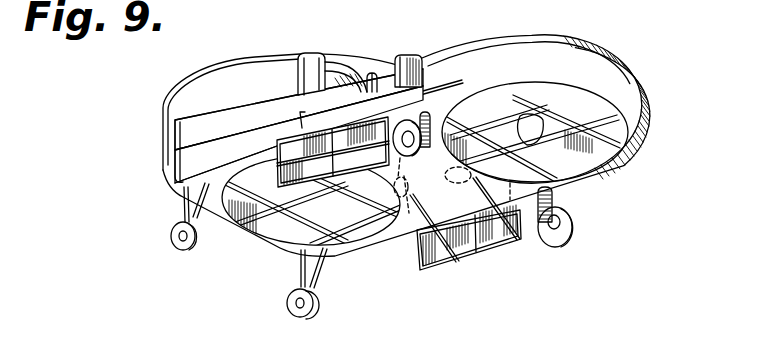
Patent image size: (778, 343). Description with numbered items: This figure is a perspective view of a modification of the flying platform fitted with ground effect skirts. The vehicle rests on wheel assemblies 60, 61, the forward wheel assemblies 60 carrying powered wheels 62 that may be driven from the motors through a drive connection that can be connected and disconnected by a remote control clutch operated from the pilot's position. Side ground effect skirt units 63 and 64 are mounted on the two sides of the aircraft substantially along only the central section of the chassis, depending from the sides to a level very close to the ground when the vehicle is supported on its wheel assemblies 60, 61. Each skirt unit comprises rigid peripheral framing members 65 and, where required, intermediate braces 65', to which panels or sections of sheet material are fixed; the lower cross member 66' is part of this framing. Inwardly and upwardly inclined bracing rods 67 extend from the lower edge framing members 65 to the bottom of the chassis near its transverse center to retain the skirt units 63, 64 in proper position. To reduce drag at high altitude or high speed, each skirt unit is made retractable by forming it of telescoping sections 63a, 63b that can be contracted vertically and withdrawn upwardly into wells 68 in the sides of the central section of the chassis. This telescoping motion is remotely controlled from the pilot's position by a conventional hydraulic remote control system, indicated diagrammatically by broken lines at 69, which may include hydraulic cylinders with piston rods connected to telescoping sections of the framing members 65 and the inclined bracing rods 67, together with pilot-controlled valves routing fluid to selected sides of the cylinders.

The forward wheel assembly 60 is at (592, 197).
The wheel assembly 61 is at (193, 243).
The powered wheel 62 is at (407, 156).
The side ground effect skirt unit 63 is at (295, 140).
The telescoping section 63a is at (373, 128).
The telescoping section 63b is at (359, 160).
The side ground effect skirt unit 64 is at (497, 242).
The rigid peripheral framing member 65 is at (350, 211).
The intermediate brace 65' is at (423, 196).
The panel cross member 66' is at (333, 176).
The inclined bracing rod 67 is at (475, 203).
The well 68 is at (291, 114).
The hydraulic remote control system 69 is at (552, 165).